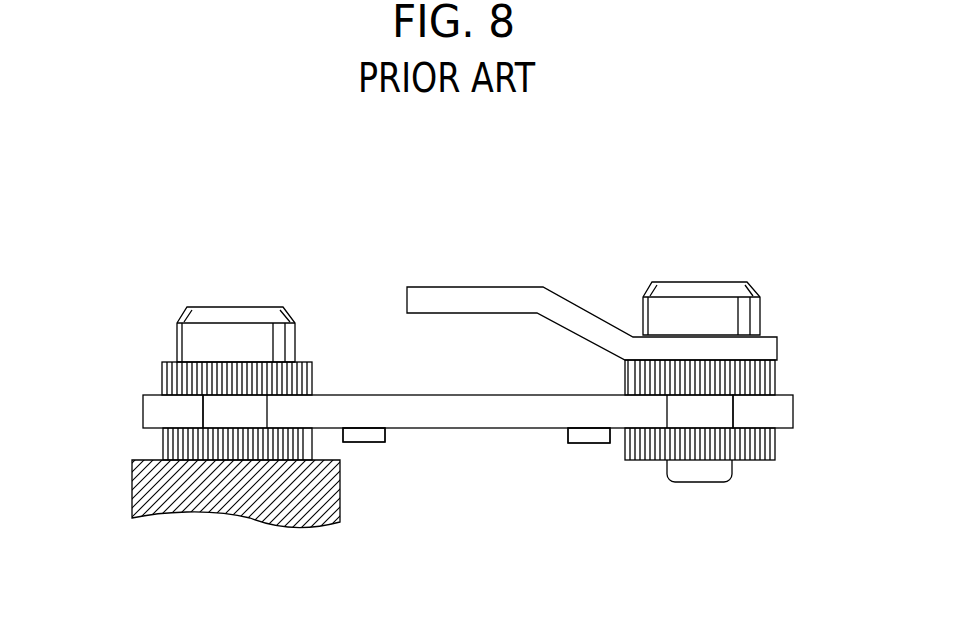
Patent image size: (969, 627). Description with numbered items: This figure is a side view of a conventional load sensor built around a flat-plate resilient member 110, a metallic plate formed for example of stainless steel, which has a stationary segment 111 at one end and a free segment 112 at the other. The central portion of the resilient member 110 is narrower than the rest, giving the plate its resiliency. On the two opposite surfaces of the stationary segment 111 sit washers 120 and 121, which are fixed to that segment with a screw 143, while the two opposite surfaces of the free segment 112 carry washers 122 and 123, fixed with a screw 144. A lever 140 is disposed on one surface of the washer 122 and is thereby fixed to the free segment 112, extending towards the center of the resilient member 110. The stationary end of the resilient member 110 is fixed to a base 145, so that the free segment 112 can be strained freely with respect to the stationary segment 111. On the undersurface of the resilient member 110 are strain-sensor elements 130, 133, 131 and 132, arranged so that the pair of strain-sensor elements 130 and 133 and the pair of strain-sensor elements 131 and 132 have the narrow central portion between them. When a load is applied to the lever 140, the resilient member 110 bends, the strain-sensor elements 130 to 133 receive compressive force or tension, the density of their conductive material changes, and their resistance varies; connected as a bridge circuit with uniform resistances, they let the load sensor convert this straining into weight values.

The resilient member 110 is at (492, 441).
The stationary segment 111 is at (153, 415).
The free segment 112 is at (780, 412).
The washer 120 is at (168, 378).
The washer 121 is at (168, 445).
The washer 122 is at (760, 377).
The washer 123 is at (767, 442).
The strain-sensor element 130 is at (360, 448).
The strain-sensor element 133 is at (364, 435).
The strain-sensor element 131 is at (587, 436).
The strain-sensor element 132 is at (589, 435).
The lever 140 is at (465, 266).
The screw 143 is at (240, 307).
The screw 144 is at (697, 285).
The base 145 is at (175, 498).